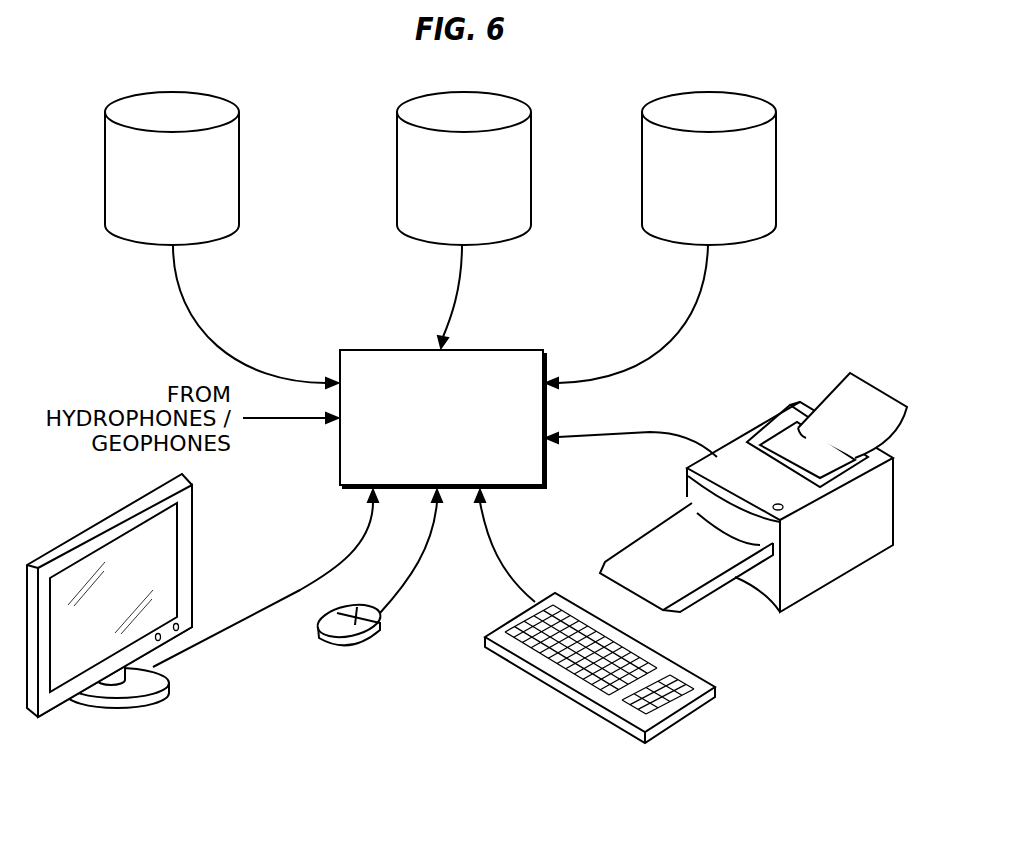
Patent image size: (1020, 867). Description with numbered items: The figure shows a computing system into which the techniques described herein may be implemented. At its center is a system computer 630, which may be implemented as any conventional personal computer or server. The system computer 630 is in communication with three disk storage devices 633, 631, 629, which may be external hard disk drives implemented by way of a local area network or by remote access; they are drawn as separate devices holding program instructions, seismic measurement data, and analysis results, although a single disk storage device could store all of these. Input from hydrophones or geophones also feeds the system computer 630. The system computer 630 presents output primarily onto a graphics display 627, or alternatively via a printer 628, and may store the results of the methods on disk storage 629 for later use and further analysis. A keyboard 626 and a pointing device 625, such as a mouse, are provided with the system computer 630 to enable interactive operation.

The disk storage device 633 is at (203, 107).
The disk storage device 631 is at (495, 107).
The disk storage device 629 is at (738, 107).
The system computer 630 is at (508, 348).
The printer 628 is at (857, 547).
The graphics display 627 is at (192, 547).
The pointing device 625 is at (355, 639).
The keyboard 626 is at (570, 688).